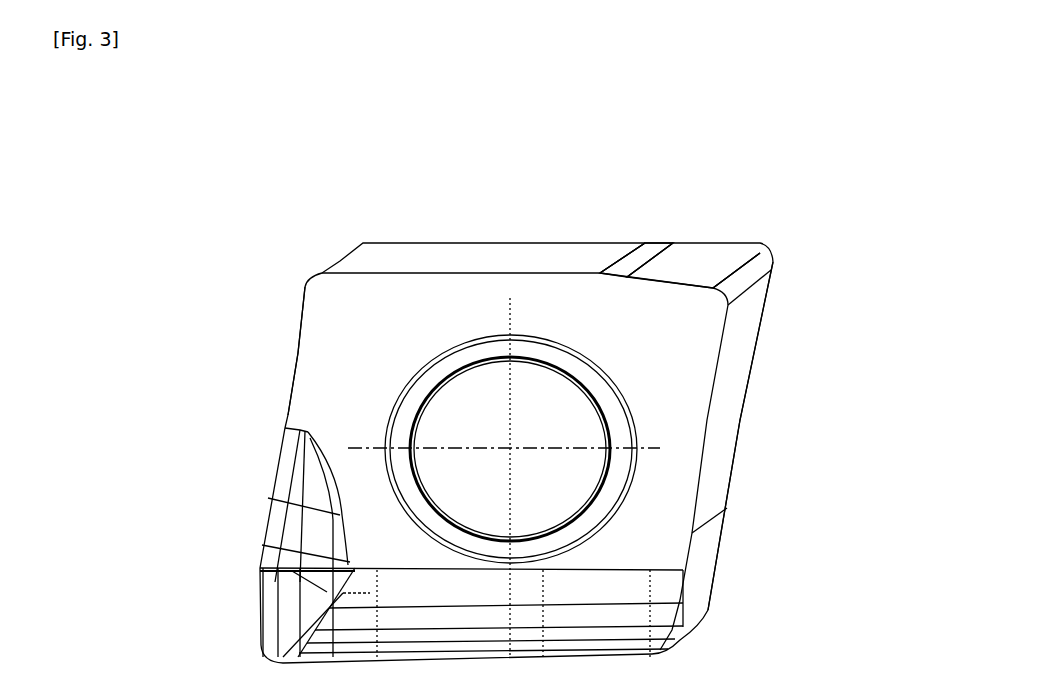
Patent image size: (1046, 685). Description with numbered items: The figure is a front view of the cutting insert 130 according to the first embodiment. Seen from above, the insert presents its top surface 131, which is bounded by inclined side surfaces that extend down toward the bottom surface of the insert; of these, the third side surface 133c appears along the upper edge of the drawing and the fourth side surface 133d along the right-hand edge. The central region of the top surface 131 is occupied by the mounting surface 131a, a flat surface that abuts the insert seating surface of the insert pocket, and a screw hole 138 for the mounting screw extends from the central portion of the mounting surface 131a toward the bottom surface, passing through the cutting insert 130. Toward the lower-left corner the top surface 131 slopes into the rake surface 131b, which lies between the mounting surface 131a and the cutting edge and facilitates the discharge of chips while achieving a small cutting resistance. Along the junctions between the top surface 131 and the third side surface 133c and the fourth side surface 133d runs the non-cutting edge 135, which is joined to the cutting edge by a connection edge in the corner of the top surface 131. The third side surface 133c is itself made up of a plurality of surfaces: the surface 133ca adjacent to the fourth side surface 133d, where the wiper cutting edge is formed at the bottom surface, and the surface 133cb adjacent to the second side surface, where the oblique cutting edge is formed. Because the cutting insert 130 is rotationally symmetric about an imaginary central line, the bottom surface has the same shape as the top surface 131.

The cutting insert 130 is at (297, 203).
The top surface 131 is at (223, 472).
The mounting surface 131a is at (323, 363).
The rake surface 131b is at (254, 542).
The third side surface 133c is at (682, 127).
The surface of the third side surface adjacent to the fourth side surface 133ca is at (691, 253).
The surface of the third side surface adjacent to the second side surface 133cb is at (567, 252).
The fourth side surface 133d is at (742, 385).
The non-cutting edge 135 is at (392, 273).
The screw hole 138 is at (575, 482).